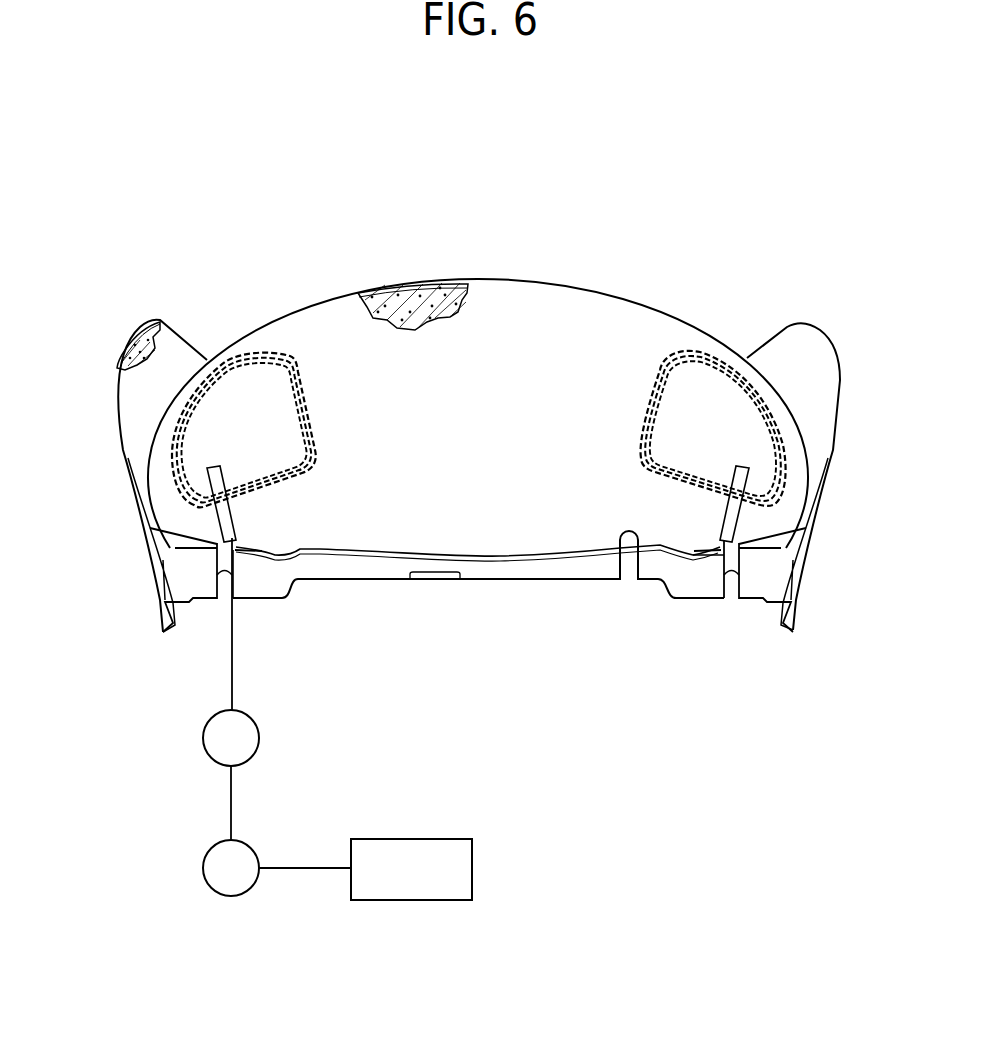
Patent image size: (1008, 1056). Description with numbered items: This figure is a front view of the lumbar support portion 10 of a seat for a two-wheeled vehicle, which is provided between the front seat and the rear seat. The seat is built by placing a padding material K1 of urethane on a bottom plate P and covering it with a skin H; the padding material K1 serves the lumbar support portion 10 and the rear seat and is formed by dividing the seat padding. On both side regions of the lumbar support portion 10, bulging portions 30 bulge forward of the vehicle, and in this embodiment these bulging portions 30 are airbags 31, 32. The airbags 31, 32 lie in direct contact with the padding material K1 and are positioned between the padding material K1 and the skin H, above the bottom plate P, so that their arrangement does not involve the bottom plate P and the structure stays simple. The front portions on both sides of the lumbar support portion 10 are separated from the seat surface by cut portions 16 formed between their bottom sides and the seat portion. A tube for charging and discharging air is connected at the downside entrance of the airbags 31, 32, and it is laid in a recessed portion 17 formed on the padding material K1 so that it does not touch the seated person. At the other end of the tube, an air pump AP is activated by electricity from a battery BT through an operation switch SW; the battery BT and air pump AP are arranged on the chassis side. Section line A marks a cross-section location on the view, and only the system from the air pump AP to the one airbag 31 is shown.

The lumbar support portion 10 is at (502, 245).
The padding material K1 is at (165, 321).
The skin H is at (135, 330).
The bulging portions 30 is at (479, 341).
The airbag 31 is at (677, 390).
The airbag 32 is at (257, 382).
The section line A is at (105, 383).
The cut portions 16 is at (175, 546).
The recessed portion 17 is at (233, 517).
The bottom plate P is at (508, 567).
The air pump AP is at (207, 724).
The operation switch SW is at (207, 855).
The battery BT is at (440, 838).